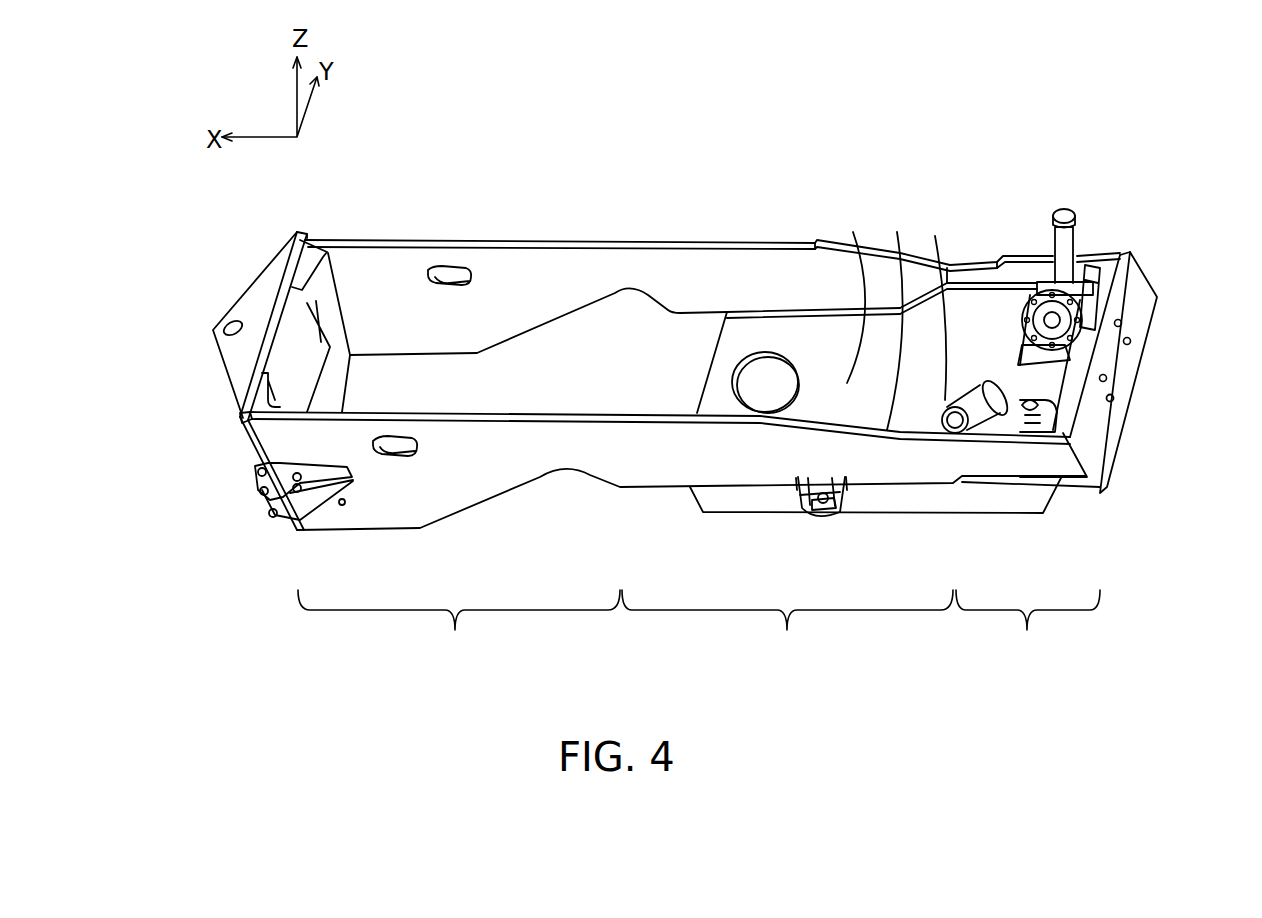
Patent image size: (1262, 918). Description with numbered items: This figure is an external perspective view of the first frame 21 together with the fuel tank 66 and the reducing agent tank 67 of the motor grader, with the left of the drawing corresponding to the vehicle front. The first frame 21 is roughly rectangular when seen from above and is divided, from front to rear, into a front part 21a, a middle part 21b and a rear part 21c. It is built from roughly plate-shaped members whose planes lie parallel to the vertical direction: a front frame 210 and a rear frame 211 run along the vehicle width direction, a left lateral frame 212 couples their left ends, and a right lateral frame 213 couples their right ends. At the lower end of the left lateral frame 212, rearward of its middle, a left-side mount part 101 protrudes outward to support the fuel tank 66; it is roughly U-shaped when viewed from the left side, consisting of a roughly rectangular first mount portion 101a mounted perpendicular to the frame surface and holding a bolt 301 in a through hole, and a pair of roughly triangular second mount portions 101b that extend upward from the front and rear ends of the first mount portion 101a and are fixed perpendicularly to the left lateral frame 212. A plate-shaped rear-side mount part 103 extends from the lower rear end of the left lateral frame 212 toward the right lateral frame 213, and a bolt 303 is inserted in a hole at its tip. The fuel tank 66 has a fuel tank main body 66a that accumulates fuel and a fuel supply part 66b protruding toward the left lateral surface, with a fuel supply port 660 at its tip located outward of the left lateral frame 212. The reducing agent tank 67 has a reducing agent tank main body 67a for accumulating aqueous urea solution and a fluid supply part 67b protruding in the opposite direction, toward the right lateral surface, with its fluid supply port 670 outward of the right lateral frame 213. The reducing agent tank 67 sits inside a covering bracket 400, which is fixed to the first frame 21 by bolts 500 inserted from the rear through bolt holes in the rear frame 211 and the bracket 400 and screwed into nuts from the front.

The first frame 21 is at (440, 167).
The front part 21a is at (459, 630).
The middle part 21b is at (787, 634).
The rear part 21c is at (1028, 633).
The front frame 210 is at (288, 313).
The rear frame 211 is at (1127, 312).
The left lateral frame 212 is at (513, 413).
The right lateral frame 213 is at (510, 241).
The fuel tank 66 is at (975, 190).
The fuel tank main body 66a is at (859, 287).
The fuel supply port 660 is at (907, 314).
The fuel supply part 66b is at (953, 305).
The reducing agent tank 67 is at (1185, 110).
The fluid supply port 670 is at (1068, 212).
The reducing agent tank main body 67a is at (1084, 283).
The fluid supply part 67b is at (1068, 250).
The bracket 400 is at (1120, 308).
The bolts 500 is at (1107, 378).
The bolt 303 is at (1113, 398).
The rear-side mount part 103 is at (1052, 417).
The left-side mount part 101 is at (853, 490).
The first mount portion 101a is at (823, 513).
The second mount portions 101b is at (797, 493).
The bolt 301 is at (843, 512).